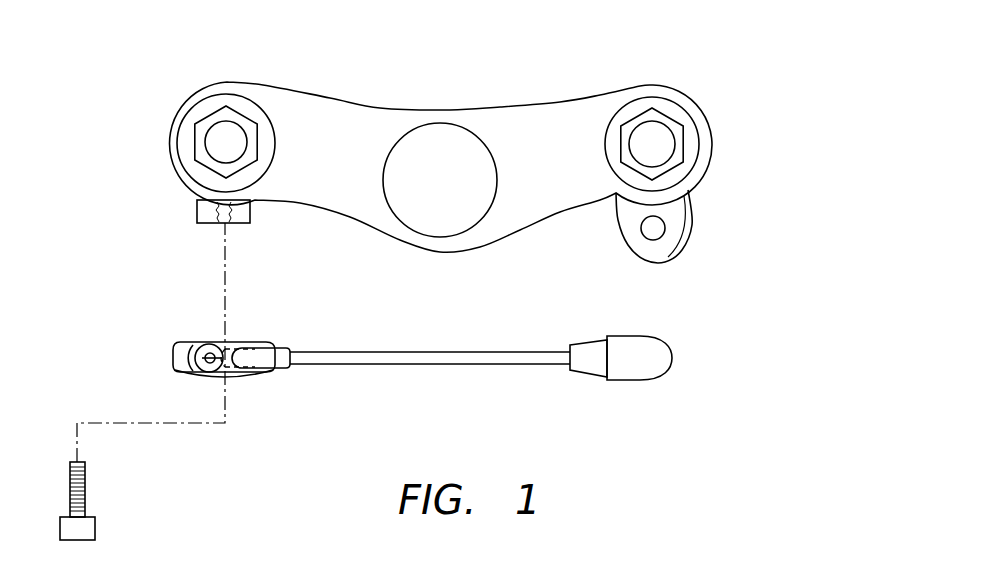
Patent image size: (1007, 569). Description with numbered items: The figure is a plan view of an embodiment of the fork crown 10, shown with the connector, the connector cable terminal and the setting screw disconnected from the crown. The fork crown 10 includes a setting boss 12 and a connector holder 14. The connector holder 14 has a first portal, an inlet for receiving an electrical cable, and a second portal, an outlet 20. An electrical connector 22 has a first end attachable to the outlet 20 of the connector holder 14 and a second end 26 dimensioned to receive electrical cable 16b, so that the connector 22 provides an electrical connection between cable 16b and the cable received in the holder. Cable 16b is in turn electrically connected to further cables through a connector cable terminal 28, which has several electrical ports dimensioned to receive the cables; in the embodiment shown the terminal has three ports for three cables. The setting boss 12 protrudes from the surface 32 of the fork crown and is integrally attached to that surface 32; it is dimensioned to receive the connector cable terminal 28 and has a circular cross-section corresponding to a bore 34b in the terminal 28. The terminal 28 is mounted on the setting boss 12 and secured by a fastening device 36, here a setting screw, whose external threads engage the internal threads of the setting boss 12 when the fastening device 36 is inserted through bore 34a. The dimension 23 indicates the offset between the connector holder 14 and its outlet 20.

The fork crown 10 is at (170, 80).
The setting boss 12 is at (184, 213).
The connector holder 14 is at (695, 253).
The electrical cable 16b is at (385, 357).
The outlet 20 is at (667, 243).
The electrical connector 22 is at (672, 358).
The offset dimension 23 is at (663, 145).
The second end 26 is at (570, 343).
The connector cable terminal 28 is at (173, 358).
The surface 32 is at (297, 183).
The bore 34a is at (232, 376).
The bore 34b is at (215, 343).
The fastening device 36 is at (85, 485).